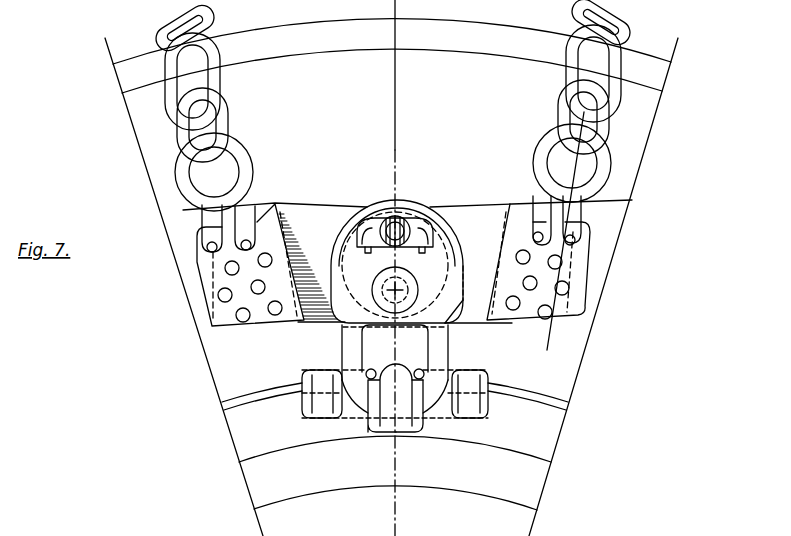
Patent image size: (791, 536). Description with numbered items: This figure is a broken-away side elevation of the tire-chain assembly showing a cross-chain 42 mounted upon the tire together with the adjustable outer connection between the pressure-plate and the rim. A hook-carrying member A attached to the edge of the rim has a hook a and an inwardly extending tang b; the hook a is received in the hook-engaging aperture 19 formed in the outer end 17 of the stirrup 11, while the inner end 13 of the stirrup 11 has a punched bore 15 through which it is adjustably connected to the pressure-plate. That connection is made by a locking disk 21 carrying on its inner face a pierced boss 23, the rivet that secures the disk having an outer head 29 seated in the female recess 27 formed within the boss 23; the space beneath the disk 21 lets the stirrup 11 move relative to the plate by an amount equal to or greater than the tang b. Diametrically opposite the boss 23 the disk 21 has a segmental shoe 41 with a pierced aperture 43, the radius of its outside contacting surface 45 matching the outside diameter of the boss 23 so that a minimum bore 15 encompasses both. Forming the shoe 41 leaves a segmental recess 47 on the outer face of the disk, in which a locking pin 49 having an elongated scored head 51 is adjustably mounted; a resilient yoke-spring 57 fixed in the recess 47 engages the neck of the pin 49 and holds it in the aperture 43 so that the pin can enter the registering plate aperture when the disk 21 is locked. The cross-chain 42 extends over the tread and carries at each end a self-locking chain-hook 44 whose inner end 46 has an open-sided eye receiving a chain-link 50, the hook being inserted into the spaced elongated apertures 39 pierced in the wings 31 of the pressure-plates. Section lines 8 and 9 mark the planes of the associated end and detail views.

The section line 8- 8 is at (394, 22).
The section line 9- 9 is at (560, 164).
The stirrup 11 is at (350, 357).
The inner end 13 is at (362, 205).
The punched bore 15 is at (470, 240).
The outer end 17 is at (433, 391).
The hook-engaging aperture 19 is at (412, 352).
The locking disk 21 is at (460, 222).
The pierced boss 23 is at (440, 312).
The female recess 27 is at (382, 292).
The outer head 29 is at (387, 296).
The wing 31 is at (220, 304).
The elongated apertures 39 is at (277, 307).
The segmental shoe 41 is at (345, 212).
The cross-chain 42 is at (170, 43).
The pierced aperture 43 is at (357, 203).
The chain-hook 44 is at (178, 173).
The outside contacting surface 45 is at (403, 217).
The inner end 46 is at (466, 483).
The segmental recess 47 is at (422, 220).
The locking pin 49 is at (393, 220).
The chain-link 50 is at (185, 126).
The elongated scored head 51 is at (388, 220).
The yoke-spring 57 is at (437, 220).
The hook a is at (392, 408).
The tang b is at (402, 413).
The hook-carrying member A is at (490, 405).